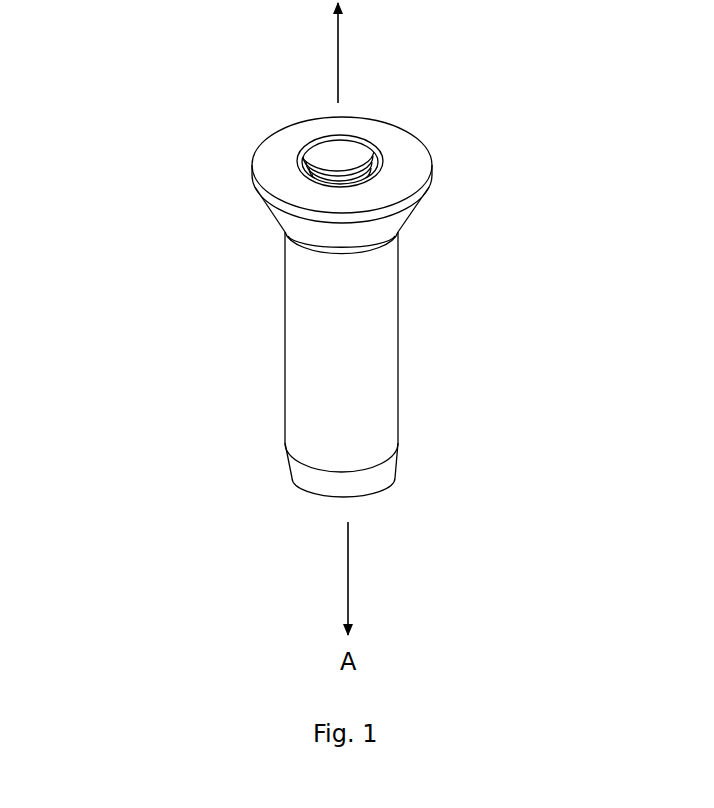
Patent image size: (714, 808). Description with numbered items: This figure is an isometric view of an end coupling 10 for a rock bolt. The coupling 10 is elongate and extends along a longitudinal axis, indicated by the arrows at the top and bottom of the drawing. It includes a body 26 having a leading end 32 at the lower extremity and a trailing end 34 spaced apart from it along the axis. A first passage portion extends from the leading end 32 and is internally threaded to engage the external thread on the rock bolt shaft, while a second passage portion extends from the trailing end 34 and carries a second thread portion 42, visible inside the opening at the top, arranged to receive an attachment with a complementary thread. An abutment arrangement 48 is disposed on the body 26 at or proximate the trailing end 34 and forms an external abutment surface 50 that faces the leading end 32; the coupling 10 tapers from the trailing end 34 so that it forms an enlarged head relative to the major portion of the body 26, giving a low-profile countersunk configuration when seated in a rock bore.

The end coupling 10 is at (200, 353).
The body 26 is at (362, 382).
The leading end 32 is at (382, 475).
The trailing end 34 is at (355, 240).
The second thread portion 42 is at (352, 143).
The abutment arrangement 48 is at (405, 212).
The external abutment surface 50 is at (283, 214).